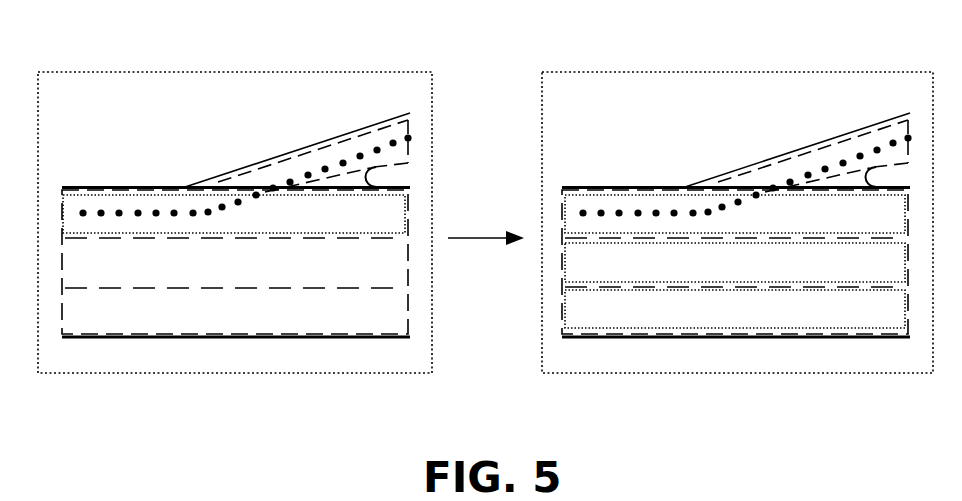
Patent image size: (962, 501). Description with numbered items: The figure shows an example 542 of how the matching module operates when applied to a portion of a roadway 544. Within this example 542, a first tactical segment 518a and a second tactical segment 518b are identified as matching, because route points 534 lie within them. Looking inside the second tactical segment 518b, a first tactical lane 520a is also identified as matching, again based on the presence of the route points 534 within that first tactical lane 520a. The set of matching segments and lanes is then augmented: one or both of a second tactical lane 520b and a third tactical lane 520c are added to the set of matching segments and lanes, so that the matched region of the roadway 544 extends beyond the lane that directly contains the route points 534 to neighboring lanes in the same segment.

The example 542 is at (95, 57).
The first tactical segment 518a is at (410, 115).
The second tactical segment 518b is at (140, 187).
The route points 534 is at (252, 182).
The portion of a roadway 544 is at (333, 138).
The first tactical lane 520a is at (379, 226).
The second tactical lane 520b is at (879, 274).
The third tactical lane 520c is at (879, 322).